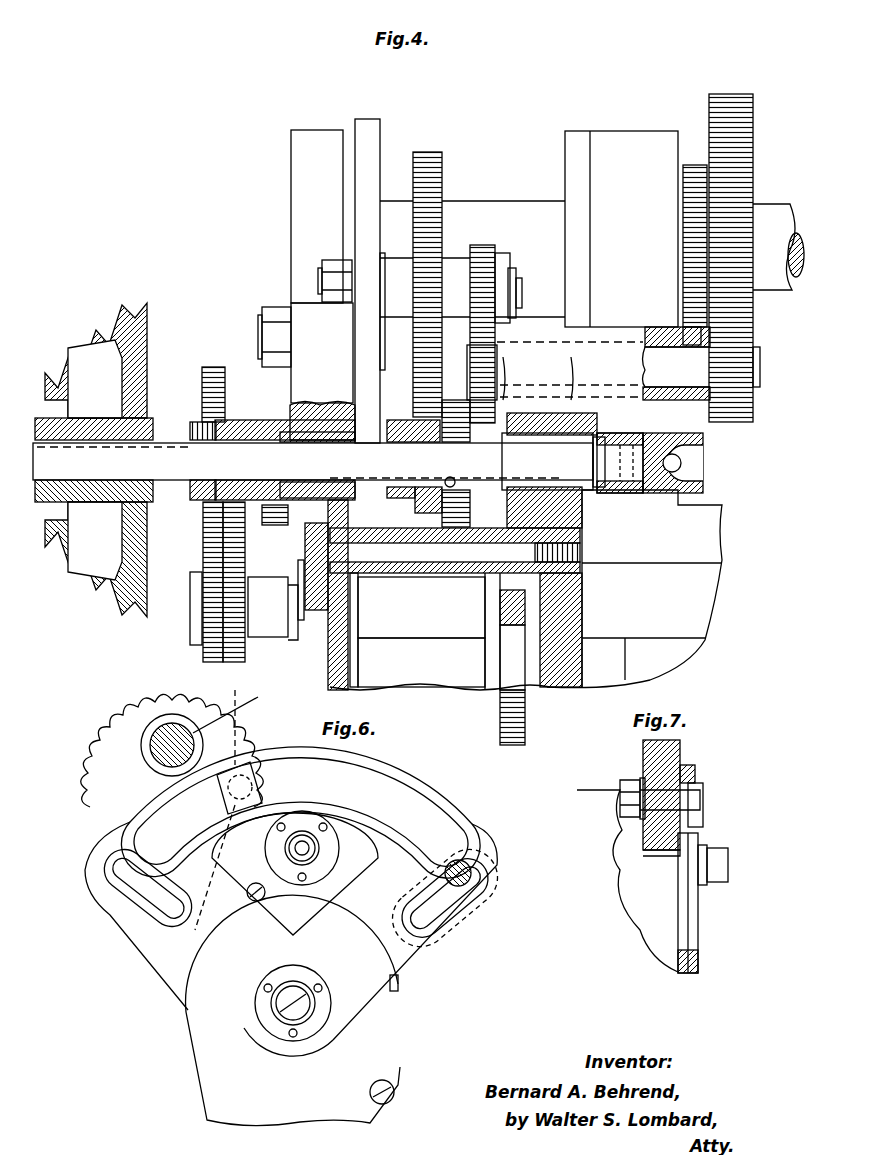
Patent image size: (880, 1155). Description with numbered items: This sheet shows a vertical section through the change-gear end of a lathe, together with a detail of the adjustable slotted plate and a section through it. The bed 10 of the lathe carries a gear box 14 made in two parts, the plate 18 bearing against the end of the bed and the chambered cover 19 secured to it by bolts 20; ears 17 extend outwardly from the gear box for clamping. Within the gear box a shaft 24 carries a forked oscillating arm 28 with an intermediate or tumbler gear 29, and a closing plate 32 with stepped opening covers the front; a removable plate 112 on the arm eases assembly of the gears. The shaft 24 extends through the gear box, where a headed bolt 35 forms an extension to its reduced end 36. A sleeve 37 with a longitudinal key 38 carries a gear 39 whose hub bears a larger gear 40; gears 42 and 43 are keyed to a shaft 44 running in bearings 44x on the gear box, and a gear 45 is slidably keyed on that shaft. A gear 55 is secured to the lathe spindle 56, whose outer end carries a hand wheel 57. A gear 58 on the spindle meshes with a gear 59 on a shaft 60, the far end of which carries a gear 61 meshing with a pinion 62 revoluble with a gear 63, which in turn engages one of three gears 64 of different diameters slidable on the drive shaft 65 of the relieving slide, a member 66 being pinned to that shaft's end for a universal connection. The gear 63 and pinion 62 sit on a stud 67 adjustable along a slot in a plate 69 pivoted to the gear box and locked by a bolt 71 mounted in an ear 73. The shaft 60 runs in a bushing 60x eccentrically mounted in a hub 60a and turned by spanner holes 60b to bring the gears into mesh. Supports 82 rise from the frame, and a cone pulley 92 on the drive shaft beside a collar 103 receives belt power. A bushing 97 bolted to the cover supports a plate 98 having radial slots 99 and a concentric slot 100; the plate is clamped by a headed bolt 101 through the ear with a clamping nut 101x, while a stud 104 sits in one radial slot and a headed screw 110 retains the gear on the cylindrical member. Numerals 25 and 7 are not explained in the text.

In FIG. 4, the bed 10 is at (705, 532).
In FIG. 4, the gear box 14 is at (440, 690).
In FIG. 6, the ears 17 is at (120, 920).
In FIG. 7, the ears 17 is at (680, 750).
In FIG. 4, the plate 18 is at (583, 608).
In FIG. 6, the plate 18 is at (205, 1090).
In FIG. 7, the plate 18 is at (628, 880).
In FIG. 4, the chambered cover 19 is at (329, 676).
In FIG. 6, the chambered cover 19 is at (187, 1027).
In FIG. 4, the bolts 20 is at (582, 556).
In FIG. 6, the bolts 20 is at (256, 890).
In FIG. 4, the shaft 24 is at (386, 640).
In FIG. 4, the rod housing 25 is at (421, 662).
In FIG. 4, the forked oscillating arm 28 is at (526, 628).
In FIG. 4, the intermediate or tumbler gear 29 is at (526, 729).
In FIG. 6, the closing plate 32 is at (448, 830).
In FIG. 4, the headed bolt 35 is at (188, 624).
In FIG. 6, the headed bolt 35 is at (320, 850).
In FIG. 6, the reduced end 36 is at (302, 875).
In FIG. 7, the reduced end 36 is at (728, 855).
In FIG. 4, the sleeve 37 is at (262, 642).
In FIG. 4, the key 38 is at (268, 575).
In FIG. 4, the gear 39 is at (204, 532).
In FIG. 4, the larger gear 40 is at (245, 543).
In FIG. 4, the gear 42 is at (210, 367).
In FIG. 4, the gear 43 is at (275, 482).
In FIG. 6, the gear 43 is at (172, 715).
In FIG. 6, the shaft 44 is at (150, 745).
In FIG. 6, the bearings 44x is at (240, 712).
In FIG. 6, the gear 45 is at (90, 778).
In FIG. 4, the gear 55 is at (693, 165).
In FIG. 4, the lathe spindle 56 is at (768, 204).
In FIG. 4, the hand wheel 57 is at (310, 130).
In FIG. 4, the gear 58 is at (750, 174).
In FIG. 4, the gear 59 is at (757, 350).
In FIG. 4, the shaft 60 is at (620, 342).
In FIG. 4, the hub 60a is at (603, 327).
In FIG. 4, the bushing 60x is at (647, 412).
In FIG. 4, the spanner holes 60b is at (692, 398).
In FIG. 4, the gear 61 is at (498, 338).
In FIG. 4, the pinion 62 is at (484, 246).
In FIG. 4, the gear 63 is at (442, 170).
In FIG. 4, the gears 64 is at (452, 487).
In FIG. 4, the drive shaft 65 is at (585, 505).
In FIG. 4, the member 66 is at (704, 460).
In FIG. 4, the stud 67 is at (318, 280).
In FIG. 4, the plate 69 is at (365, 122).
In FIG. 4, the bolt 71 is at (258, 328).
In FIG. 4, the ear 73 is at (310, 318).
In FIG. 4, the supports 82 is at (613, 131).
In FIG. 4, the cone pulley 92 is at (94, 460).
In FIG. 6, the bushing 97 is at (312, 975).
In FIG. 4, the plate 98 is at (318, 614).
In FIG. 6, the plate 98 is at (398, 982).
In FIG. 7, the plate 98 is at (700, 768).
In FIG. 6, the radial slots 99 is at (165, 930).
In FIG. 7, the radial slots 99 is at (698, 922).
In FIG. 4, the concentric slot 100 is at (357, 610).
In FIG. 6, the concentric slot 100 is at (400, 800).
In FIG. 7, the concentric slot 100 is at (672, 858).
In FIG. 6, the headed bolt 101 is at (252, 765).
In FIG. 7, the headed bolt 101 is at (704, 798).
In FIG. 7, the clamping nut 101x is at (628, 780).
In FIG. 4, the collar 103 is at (195, 422).
In FIG. 6, the stud 104 is at (466, 884).
In FIG. 6, the headed screw 110 is at (292, 988).
In FIG. 4, the removable plate 112 is at (488, 656).
In FIG. 6, the pin 7 is at (232, 848).